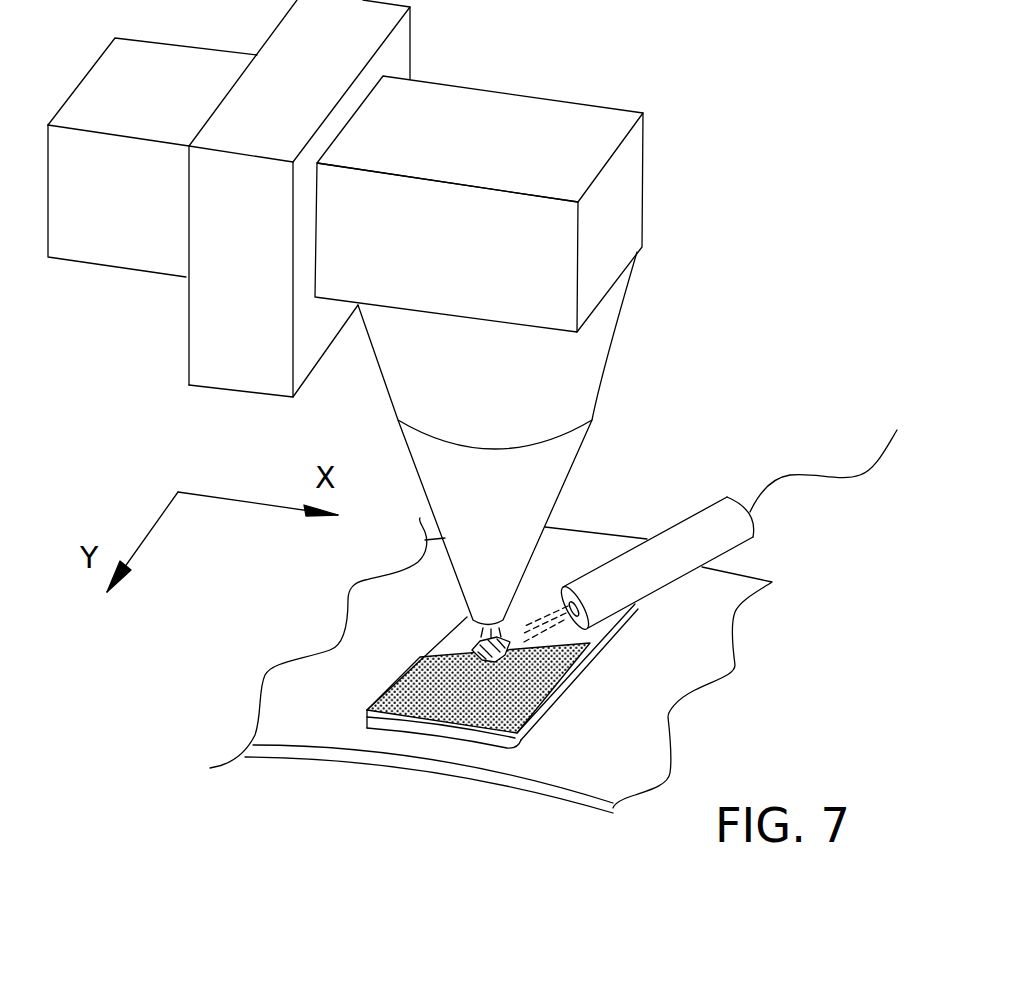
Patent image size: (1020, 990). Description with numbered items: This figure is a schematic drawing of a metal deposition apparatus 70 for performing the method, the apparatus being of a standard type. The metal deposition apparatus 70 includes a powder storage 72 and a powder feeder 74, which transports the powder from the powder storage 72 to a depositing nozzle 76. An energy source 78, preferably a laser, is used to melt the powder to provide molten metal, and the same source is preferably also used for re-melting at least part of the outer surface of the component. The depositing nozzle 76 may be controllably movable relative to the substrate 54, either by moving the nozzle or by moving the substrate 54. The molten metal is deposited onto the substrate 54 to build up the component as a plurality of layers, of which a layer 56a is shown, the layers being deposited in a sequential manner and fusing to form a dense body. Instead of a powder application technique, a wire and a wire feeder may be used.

The metal deposition apparatus 70 is at (757, 92).
The powder storage 72 is at (132, 220).
The powder feeder 74 is at (227, 308).
The depositing nozzle 76 is at (528, 508).
The energy source 78 is at (678, 550).
The substrate 54 is at (323, 723).
The layer 56a is at (467, 735).